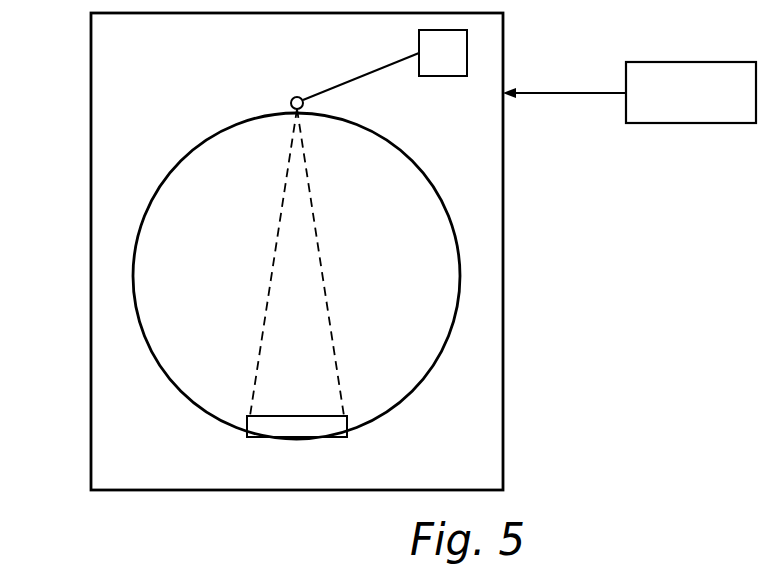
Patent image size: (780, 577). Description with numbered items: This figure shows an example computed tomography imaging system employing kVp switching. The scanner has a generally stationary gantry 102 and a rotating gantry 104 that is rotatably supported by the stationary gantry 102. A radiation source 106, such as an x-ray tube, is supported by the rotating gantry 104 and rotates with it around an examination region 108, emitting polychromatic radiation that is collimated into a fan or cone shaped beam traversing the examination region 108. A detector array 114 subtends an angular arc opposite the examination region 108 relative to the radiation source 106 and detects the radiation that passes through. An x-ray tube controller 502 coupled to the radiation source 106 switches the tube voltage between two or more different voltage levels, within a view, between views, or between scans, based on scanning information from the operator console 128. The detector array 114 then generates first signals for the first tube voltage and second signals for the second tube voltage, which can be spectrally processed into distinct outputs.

The generally stationary gantry 102 is at (91, 117).
The rotating gantry 104 is at (138, 318).
The radiation source 106 is at (291, 104).
The examination region 108 is at (311, 349).
The detector array 114 is at (253, 437).
The operator console 128 is at (700, 62).
The x-ray tube controller 502 is at (447, 76).